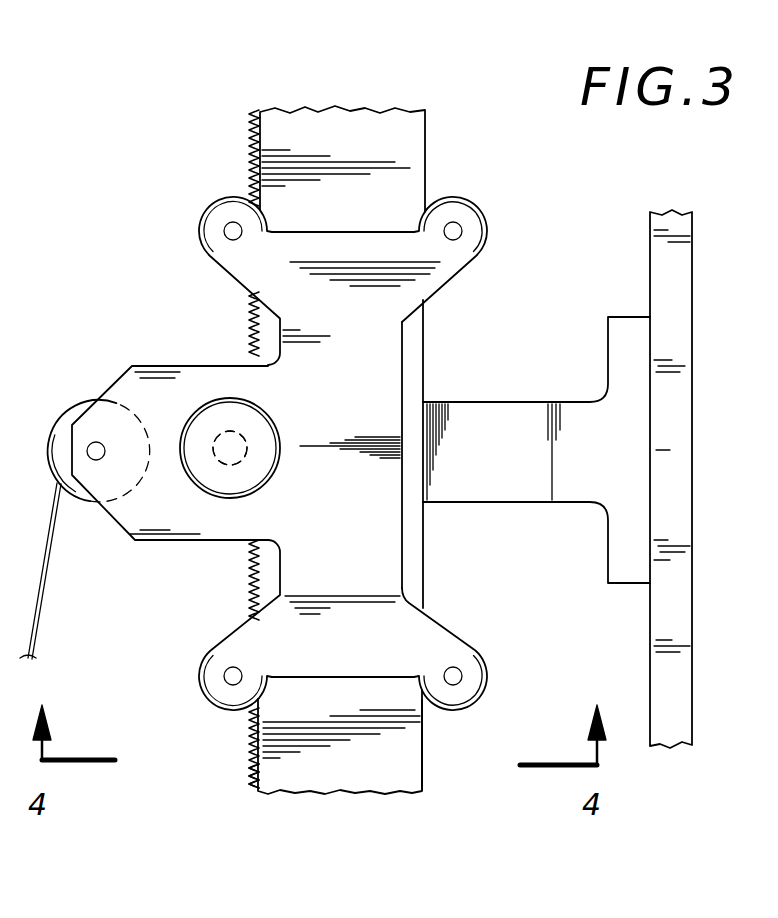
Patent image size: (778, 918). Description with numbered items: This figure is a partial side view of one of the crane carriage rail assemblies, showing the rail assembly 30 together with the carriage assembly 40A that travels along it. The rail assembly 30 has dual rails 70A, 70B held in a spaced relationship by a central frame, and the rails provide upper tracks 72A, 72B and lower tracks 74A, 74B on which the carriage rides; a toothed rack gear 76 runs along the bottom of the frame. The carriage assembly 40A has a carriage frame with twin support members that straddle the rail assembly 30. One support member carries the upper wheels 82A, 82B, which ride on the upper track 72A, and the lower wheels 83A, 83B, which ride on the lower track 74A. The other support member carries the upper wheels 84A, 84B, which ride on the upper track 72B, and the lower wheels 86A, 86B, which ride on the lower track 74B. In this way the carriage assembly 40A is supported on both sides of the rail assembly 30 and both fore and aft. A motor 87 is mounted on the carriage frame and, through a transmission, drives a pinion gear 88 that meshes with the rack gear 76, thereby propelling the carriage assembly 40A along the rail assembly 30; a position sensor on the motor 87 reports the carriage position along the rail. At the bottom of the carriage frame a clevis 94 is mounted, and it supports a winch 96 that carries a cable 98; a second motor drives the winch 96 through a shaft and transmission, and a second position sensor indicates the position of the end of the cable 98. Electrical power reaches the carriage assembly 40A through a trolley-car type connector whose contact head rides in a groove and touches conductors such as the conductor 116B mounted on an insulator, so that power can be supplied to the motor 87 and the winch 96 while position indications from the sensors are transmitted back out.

The rail assembly 30 is at (484, 390).
The carriage assembly 40A is at (423, 560).
The rail 70A is at (316, 492).
The rail 70B is at (302, 791).
The upper track 72A is at (499, 787).
The upper track 72B is at (422, 773).
The lower track 74A is at (192, 427).
The lower track 74B is at (257, 113).
The rack gear 76 is at (250, 772).
The upper wheel 82A is at (511, 247).
The upper wheel 84A is at (456, 198).
The upper wheel 82B is at (513, 649).
The upper wheel 84B is at (470, 647).
The lower wheel 83A is at (185, 268).
The lower wheel 86A is at (238, 198).
The lower wheel 83B is at (177, 643).
The lower wheel 86B is at (216, 706).
The motor 87 is at (217, 500).
The pinion gear 88 is at (236, 428).
The clevis 94 is at (150, 366).
The winch 96 is at (70, 412).
The cable 98 is at (36, 628).
The conductor 116B is at (31, 142).